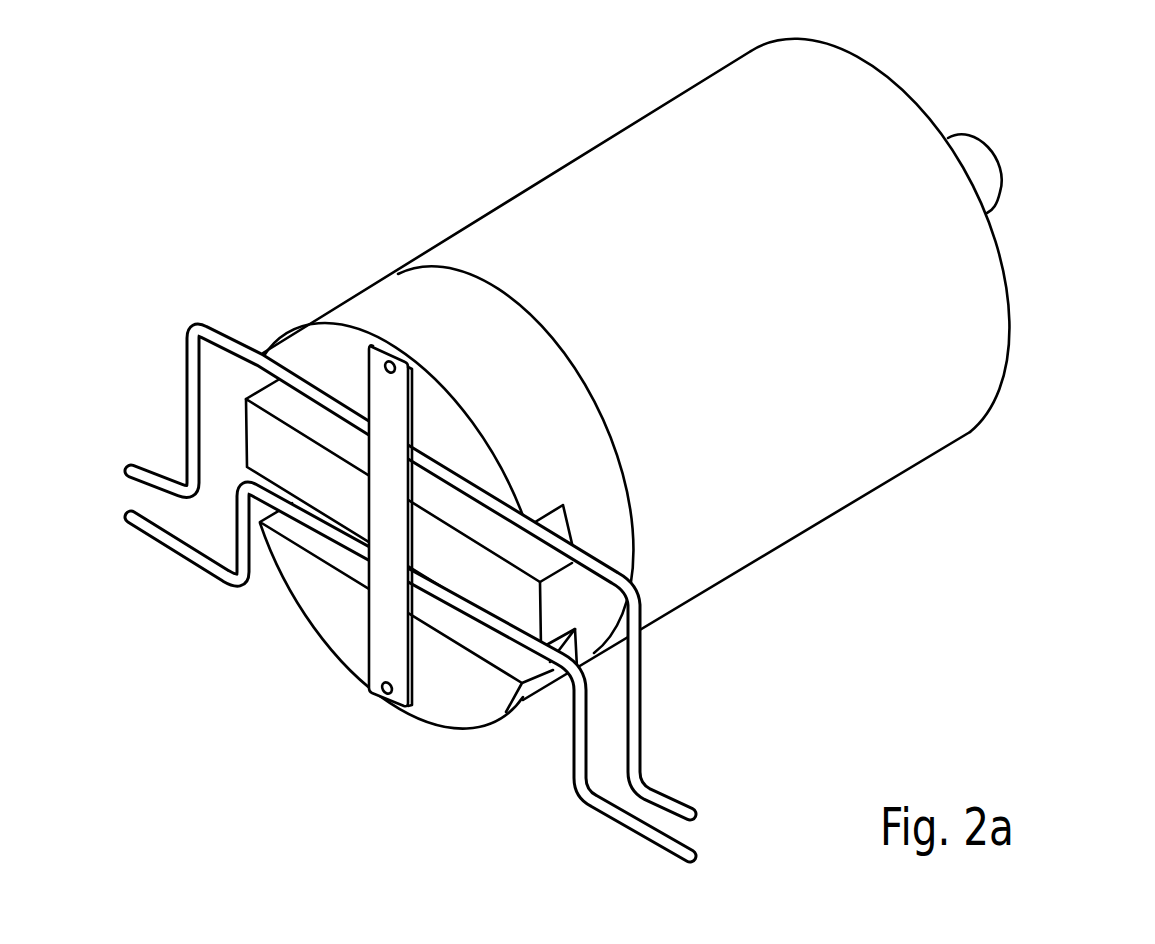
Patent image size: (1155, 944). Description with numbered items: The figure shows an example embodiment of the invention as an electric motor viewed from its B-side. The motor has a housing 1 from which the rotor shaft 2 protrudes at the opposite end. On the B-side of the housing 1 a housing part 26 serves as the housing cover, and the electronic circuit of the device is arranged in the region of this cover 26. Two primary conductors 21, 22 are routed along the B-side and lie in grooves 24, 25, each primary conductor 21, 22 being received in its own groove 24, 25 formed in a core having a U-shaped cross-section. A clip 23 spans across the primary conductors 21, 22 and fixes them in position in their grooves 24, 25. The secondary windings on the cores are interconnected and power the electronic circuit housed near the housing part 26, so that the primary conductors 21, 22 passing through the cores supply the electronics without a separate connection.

The housing 1 is at (870, 398).
The rotor shaft 2 is at (982, 173).
The primary conductor 21 is at (636, 713).
The primary conductor 22 is at (612, 810).
The clip 23 is at (387, 645).
The groove 24 is at (313, 532).
The groove 25 is at (303, 410).
The housing part 26 is at (402, 302).